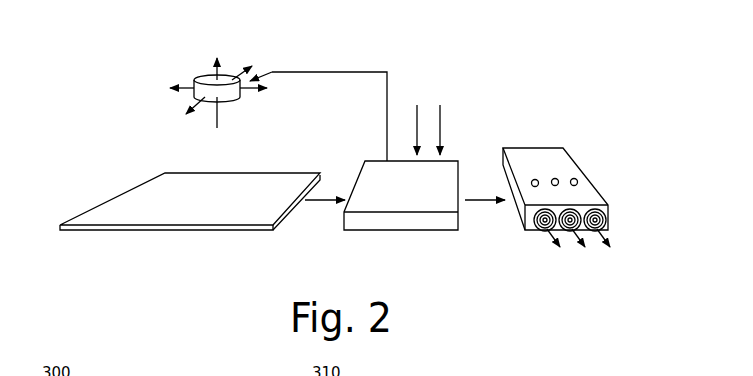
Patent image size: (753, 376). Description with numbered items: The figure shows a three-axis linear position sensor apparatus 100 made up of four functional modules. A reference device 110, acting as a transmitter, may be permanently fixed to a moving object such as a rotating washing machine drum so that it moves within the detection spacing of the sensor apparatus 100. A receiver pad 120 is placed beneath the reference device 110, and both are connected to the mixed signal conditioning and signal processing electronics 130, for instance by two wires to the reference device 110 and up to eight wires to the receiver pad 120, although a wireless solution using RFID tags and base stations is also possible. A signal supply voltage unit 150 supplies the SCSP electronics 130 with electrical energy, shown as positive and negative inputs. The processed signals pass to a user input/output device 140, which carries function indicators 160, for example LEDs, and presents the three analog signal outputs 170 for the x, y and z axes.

The three-axis linear position sensor apparatus 100 is at (512, 66).
The reference device 110 is at (210, 72).
The receiver pad 120 is at (172, 217).
The mixed signal conditioning and signal processing electronics 130 is at (409, 200).
The user input/output device 140 is at (538, 157).
The signal supply voltage unit 150 is at (432, 105).
The function indicators 160 is at (560, 173).
The three analog signal outputs 170 is at (597, 233).